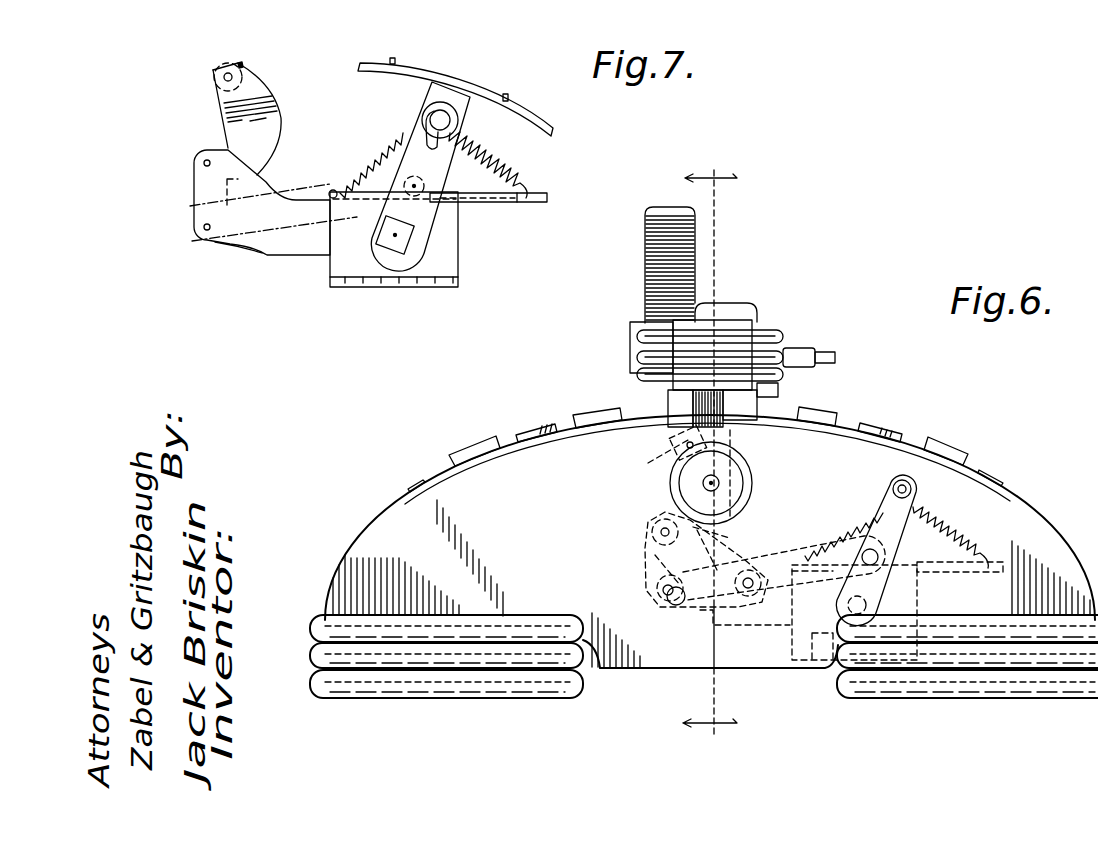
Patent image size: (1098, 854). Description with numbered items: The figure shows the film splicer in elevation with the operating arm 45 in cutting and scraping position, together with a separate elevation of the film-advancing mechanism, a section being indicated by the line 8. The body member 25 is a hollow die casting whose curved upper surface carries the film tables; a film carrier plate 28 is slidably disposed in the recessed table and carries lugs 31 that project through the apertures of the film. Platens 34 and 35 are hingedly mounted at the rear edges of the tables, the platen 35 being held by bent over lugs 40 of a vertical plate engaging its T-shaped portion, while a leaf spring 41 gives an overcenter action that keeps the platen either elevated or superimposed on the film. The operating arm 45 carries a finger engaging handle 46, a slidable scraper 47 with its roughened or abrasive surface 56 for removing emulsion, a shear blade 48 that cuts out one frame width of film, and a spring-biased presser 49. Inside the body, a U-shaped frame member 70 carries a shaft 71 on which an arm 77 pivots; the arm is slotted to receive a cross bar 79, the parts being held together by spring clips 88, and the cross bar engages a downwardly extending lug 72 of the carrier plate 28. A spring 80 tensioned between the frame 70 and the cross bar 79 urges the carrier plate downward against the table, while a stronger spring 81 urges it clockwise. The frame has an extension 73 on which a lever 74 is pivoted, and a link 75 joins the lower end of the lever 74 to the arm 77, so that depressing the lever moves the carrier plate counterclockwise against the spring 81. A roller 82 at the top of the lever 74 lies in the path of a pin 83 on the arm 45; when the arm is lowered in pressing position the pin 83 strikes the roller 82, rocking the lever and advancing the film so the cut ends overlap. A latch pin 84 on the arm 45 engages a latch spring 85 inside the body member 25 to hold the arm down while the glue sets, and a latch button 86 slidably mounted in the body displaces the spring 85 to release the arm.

In FIG. 6, the section line 8- 8 is at (710, 449).
In FIG. 6, the body member 25 is at (528, 537).
In FIG. 7, the film carrier plate 28 is at (535, 117).
In FIG. 7, the lugs 31 is at (396, 58).
In FIG. 6, the platen 34 is at (421, 484).
In FIG. 6, the platen 35 is at (992, 473).
In FIG. 6, the bent over lugs 40 is at (474, 452).
In FIG. 6, the leaf spring 41 is at (535, 428).
In FIG. 6, the operating arm 45 is at (735, 318).
In FIG. 6, the finger engaging handle 46 is at (790, 337).
In FIG. 6, the slidable scraper 47 is at (643, 266).
In FIG. 6, the shear blade 48 is at (722, 428).
In FIG. 6, the presser 49 is at (782, 392).
In FIG. 6, the roughened or abrasive surface 56 is at (676, 425).
In FIG. 7, the U-shaped frame member 70 is at (445, 245).
In FIG. 6, the U-shaped frame member 70 is at (920, 598).
In FIG. 7, the shaft 71 is at (397, 250).
In FIG. 7, the downwardly extending lug 72 is at (450, 90).
In FIG. 7, the extension 73 is at (290, 250).
In FIG. 6, the extension 73 is at (728, 626).
In FIG. 7, the lever 74 is at (272, 102).
In FIG. 7, the link 75 is at (303, 190).
In FIG. 6, the link 75 is at (796, 560).
In FIG. 7, the arm 77 is at (425, 186).
In FIG. 7, the cross bar 79 is at (432, 117).
In FIG. 6, the cross bar 79 is at (891, 487).
In FIG. 7, the spring 80 is at (392, 144).
In FIG. 6, the spring 80 is at (850, 520).
In FIG. 7, the spring 81 is at (525, 170).
In FIG. 6, the spring 81 is at (968, 546).
In FIG. 7, the roller 82 is at (243, 65).
In FIG. 6, the roller 82 is at (678, 456).
In FIG. 6, the pin 83 is at (832, 355).
In FIG. 6, the latch pin 84 is at (796, 352).
In FIG. 6, the latch spring 85 is at (732, 548).
In FIG. 6, the latch button 86 is at (752, 492).
In FIG. 7, the spring clips 88 is at (427, 130).